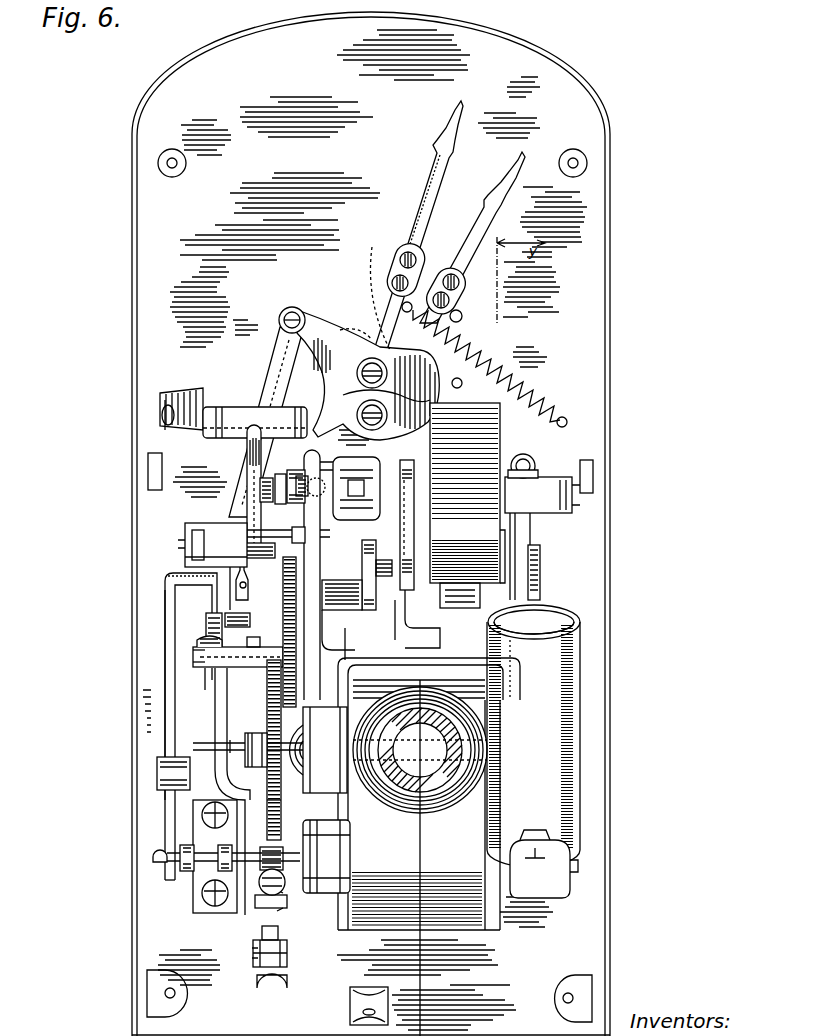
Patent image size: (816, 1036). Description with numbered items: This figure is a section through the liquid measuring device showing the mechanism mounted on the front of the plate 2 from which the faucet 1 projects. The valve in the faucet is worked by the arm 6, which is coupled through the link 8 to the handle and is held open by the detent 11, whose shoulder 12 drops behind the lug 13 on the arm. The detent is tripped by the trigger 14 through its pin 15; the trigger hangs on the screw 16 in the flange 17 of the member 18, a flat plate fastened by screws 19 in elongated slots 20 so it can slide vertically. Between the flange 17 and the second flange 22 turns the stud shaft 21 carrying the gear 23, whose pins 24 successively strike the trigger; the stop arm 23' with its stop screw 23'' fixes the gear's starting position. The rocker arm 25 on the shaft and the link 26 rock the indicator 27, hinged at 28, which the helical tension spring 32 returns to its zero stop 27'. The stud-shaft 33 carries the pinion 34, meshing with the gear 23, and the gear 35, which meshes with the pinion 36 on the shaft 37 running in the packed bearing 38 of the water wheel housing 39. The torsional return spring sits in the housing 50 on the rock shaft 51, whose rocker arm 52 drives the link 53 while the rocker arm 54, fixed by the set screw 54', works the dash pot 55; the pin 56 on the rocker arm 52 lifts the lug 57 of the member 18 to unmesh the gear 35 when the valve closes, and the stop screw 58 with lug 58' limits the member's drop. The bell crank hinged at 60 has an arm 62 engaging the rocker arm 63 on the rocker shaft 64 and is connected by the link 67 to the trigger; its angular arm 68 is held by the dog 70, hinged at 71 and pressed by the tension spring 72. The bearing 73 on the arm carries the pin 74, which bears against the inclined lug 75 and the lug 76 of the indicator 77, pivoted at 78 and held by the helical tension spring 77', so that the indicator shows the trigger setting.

The faucet 1 is at (450, 812).
The plate 2 is at (185, 115).
The arm 6 is at (510, 673).
The link 8 is at (445, 627).
The detent 11 is at (362, 600).
The shoulder 12 is at (268, 504).
The lug 13 is at (325, 505).
The trigger 14 is at (306, 589).
The pin 15 is at (352, 643).
The screw 16 is at (296, 504).
The flange 17 is at (326, 628).
The member 18 is at (340, 452).
The screws 19 is at (324, 487).
The elongated slots 20 is at (258, 461).
The stud shaft 21 is at (232, 642).
The flange 22 is at (214, 694).
The gear 23 is at (196, 683).
The stop arm 23' is at (146, 669).
The stop screw 23'' is at (145, 646).
The pins 24 is at (267, 688).
The rocker arm 25 is at (228, 610).
The link 26 is at (281, 364).
The indicator 27 is at (472, 237).
The stop 27' is at (467, 320).
The hinge 28 is at (387, 408).
The helical tension spring 32 is at (527, 387).
The stud-shaft 33 is at (229, 746).
The pinion 34 is at (302, 787).
The gear 35 is at (272, 810).
The pinion 36 is at (283, 875).
The shaft 37 is at (248, 863).
The packed bearing 38 is at (333, 852).
The water wheel housing 39 is at (420, 815).
The housing 50 is at (435, 527).
The rock shaft 51 is at (573, 500).
The rocker arm 52 is at (398, 467).
The link 53 is at (430, 553).
The rocker arm 54 is at (543, 556).
The set screw 54' is at (538, 459).
The dash pot 55 is at (560, 800).
The pin 56 is at (375, 552).
The lug 57 is at (385, 560).
The stop screw 58 is at (236, 955).
The foot 58' is at (292, 939).
The hinge 60 is at (185, 546).
The arm 62 is at (242, 516).
The rocker arm 63 is at (296, 617).
The rocker shaft 64 is at (246, 578).
The link 67 is at (250, 473).
The angular arm 68 is at (167, 620).
The dog 70 is at (167, 817).
The hinge 71 is at (155, 783).
The tension spring 72 is at (169, 867).
The bearing 73 is at (234, 406).
The pin 74 is at (189, 422).
The inclined lug 75 is at (180, 397).
The lug 76 is at (318, 360).
The indicator 77 is at (408, 225).
The helical tension spring 77' is at (490, 368).
The pivot 78 is at (372, 370).